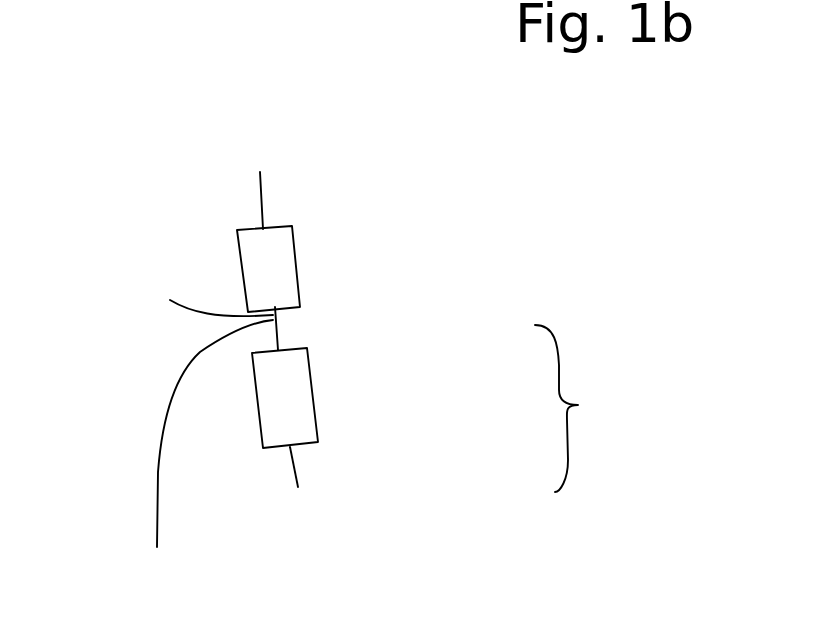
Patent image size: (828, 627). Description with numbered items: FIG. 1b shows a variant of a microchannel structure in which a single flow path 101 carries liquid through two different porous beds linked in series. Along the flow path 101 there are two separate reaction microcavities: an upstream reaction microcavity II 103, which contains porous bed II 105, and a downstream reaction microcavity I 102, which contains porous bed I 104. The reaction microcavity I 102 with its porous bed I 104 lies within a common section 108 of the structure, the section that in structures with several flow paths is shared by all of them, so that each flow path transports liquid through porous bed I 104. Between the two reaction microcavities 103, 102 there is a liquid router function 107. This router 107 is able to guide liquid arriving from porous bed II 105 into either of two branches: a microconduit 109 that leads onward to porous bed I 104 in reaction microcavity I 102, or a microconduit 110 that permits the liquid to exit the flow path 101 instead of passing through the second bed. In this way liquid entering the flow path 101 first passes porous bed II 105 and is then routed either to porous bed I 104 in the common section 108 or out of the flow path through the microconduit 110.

The flow path 101 is at (260, 195).
The reaction microcavity II 103 is at (353, 256).
The porous bed II 105 is at (262, 266).
The reaction microcavity I 102 is at (363, 417).
The porous bed I 104 is at (290, 405).
The liquid router function 107 is at (185, 293).
The common section 108 is at (592, 408).
The microconduit 109 is at (278, 327).
The microconduit 110 is at (157, 472).